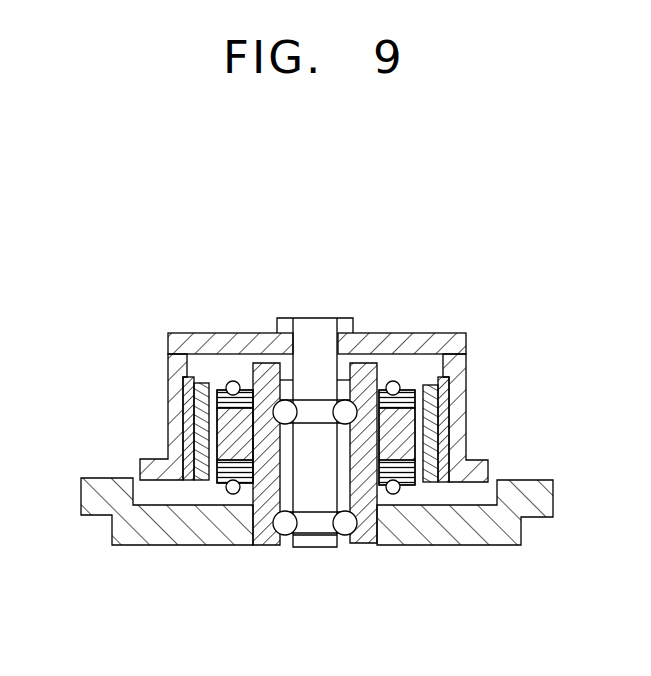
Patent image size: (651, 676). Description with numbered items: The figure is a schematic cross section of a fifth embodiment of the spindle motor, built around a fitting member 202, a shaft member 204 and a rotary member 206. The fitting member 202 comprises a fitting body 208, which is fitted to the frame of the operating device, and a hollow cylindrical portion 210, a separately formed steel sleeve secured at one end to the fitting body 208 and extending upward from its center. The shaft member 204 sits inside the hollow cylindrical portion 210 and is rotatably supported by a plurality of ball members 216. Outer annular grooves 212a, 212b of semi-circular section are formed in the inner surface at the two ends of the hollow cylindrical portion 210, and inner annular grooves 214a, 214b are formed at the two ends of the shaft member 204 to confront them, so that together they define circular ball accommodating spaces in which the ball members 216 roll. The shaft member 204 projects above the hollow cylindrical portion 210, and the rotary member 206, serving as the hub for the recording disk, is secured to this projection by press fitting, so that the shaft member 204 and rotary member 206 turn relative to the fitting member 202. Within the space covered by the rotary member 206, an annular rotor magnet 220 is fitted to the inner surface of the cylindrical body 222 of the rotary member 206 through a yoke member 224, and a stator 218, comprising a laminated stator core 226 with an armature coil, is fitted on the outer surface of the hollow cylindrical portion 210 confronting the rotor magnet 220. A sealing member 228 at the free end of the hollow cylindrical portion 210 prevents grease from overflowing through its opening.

The fitting member 202 is at (396, 552).
The shaft member 204 is at (322, 316).
The rotary member 206 is at (330, 470).
The fitting body 208 is at (130, 525).
The hollow cylindrical portion 210 is at (380, 507).
The outer annular groove 212a is at (268, 547).
The outer annular groove 212b is at (265, 405).
The inner annular groove 214a is at (283, 535).
The inner annular groove 214b is at (243, 347).
The ball members 216 is at (245, 338).
The stator 218 is at (215, 380).
The rotor magnet 220 is at (201, 477).
The cylindrical body 222 is at (458, 413).
The yoke member 224 is at (200, 424).
The stator core 226 is at (186, 418).
The sealing member 228 is at (347, 408).